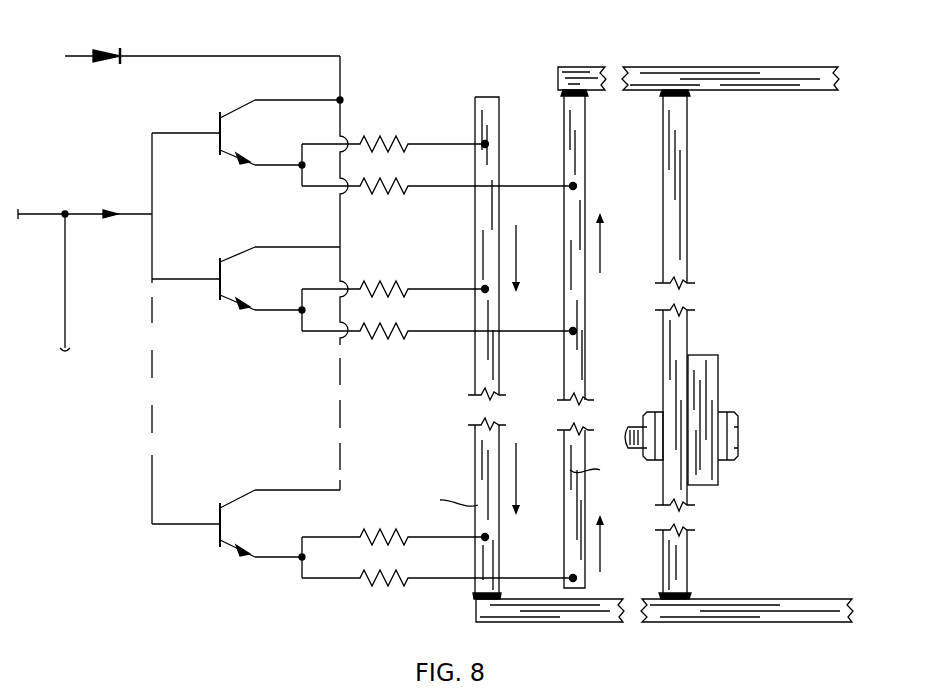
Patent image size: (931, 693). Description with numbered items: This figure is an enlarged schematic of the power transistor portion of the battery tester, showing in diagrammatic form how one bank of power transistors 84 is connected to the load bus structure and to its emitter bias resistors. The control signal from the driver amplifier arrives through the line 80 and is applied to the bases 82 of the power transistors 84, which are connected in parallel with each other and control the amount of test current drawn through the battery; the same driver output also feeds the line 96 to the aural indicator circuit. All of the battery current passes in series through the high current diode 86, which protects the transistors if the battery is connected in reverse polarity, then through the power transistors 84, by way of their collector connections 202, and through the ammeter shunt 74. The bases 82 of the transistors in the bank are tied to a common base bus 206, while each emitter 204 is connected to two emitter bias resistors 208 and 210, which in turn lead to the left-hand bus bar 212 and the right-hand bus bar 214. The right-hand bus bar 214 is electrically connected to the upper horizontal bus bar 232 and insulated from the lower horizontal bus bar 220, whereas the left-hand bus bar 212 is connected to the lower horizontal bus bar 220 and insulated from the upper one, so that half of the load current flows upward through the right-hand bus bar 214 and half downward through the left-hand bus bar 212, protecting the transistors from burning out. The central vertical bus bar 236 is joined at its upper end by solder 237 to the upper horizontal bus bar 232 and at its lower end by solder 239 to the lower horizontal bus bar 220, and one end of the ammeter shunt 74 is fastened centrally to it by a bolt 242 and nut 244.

The ammeter shunt 74 is at (707, 385).
The line 80 is at (125, 212).
The base 82 is at (170, 133).
The power transistor 84 is at (285, 146).
The high current diode 86 is at (112, 53).
The line 96 is at (67, 325).
The collector conductor 202 is at (285, 100).
The emitter 204 is at (268, 165).
The base bus 206 is at (152, 478).
The emitter bias resistor 208 is at (385, 143).
The emitter bias resistor 210 is at (385, 187).
The left-hand bus bar 212 is at (475, 440).
The right-hand bus bar 214 is at (572, 383).
The lower horizontal bus bar 220 is at (598, 612).
The upper horizontal bus bar 232 is at (573, 70).
The central vertical bus bar 236 is at (675, 257).
The solder 237 is at (690, 95).
The solder 239 is at (690, 598).
The bolt 242 is at (740, 452).
The nut 244 is at (653, 412).